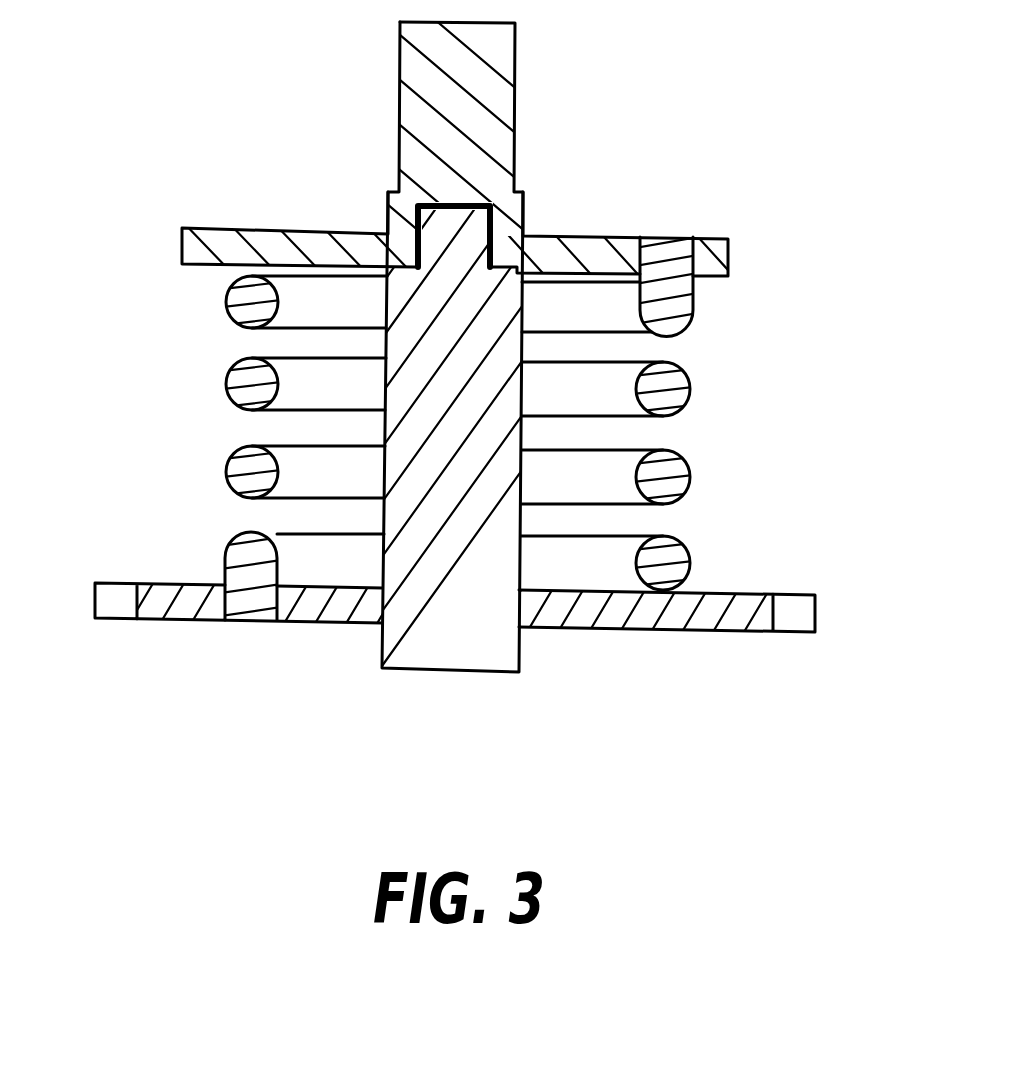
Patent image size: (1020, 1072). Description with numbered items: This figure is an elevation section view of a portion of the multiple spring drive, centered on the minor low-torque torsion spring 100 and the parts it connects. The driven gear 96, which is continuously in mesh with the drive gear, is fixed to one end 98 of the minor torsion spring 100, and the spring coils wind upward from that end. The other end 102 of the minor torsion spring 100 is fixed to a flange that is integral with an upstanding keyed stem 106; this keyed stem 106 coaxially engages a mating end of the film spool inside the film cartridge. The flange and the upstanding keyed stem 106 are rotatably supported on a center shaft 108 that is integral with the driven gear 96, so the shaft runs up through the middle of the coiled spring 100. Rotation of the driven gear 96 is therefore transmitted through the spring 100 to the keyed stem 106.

The upstanding keyed stem 106 is at (293, 229).
The center shaft 108 is at (480, 620).
The driven gear 96 is at (183, 605).
The one end of minor low-torque torsion spring 98 is at (223, 555).
The another end of minor torsion spring 102 is at (682, 311).
The minor low-torque torsion spring 100 is at (227, 387).